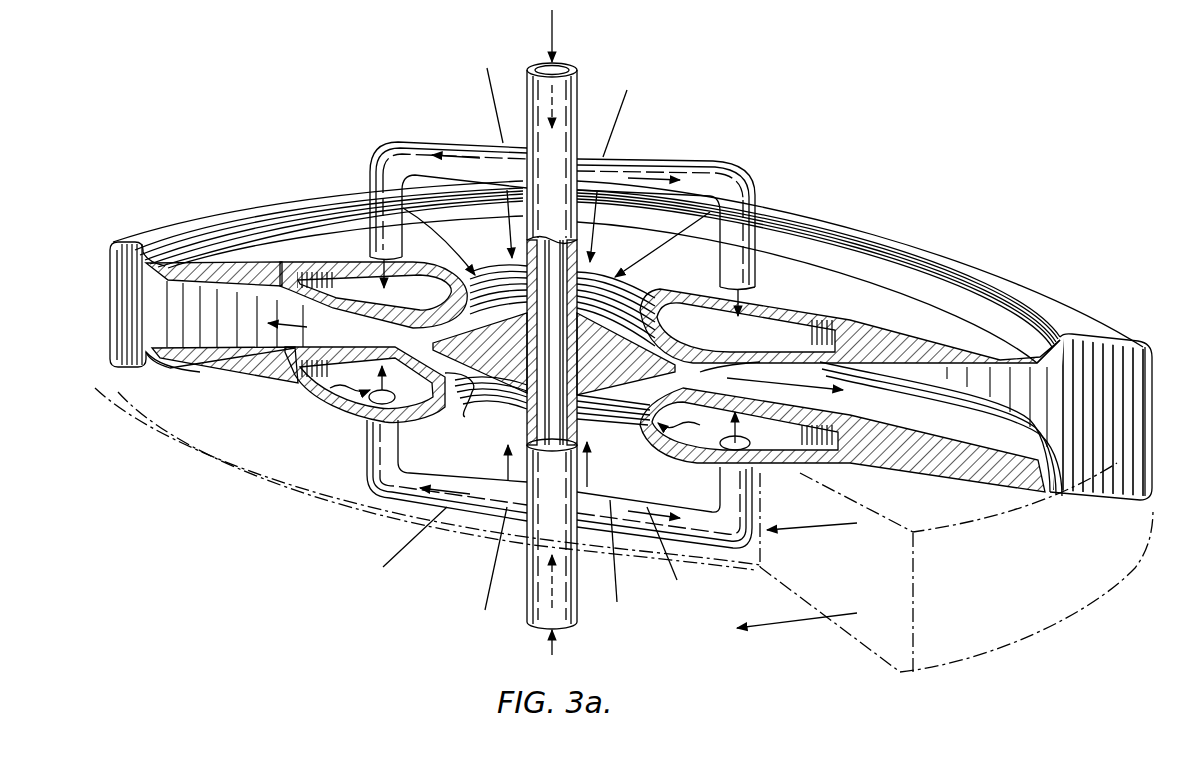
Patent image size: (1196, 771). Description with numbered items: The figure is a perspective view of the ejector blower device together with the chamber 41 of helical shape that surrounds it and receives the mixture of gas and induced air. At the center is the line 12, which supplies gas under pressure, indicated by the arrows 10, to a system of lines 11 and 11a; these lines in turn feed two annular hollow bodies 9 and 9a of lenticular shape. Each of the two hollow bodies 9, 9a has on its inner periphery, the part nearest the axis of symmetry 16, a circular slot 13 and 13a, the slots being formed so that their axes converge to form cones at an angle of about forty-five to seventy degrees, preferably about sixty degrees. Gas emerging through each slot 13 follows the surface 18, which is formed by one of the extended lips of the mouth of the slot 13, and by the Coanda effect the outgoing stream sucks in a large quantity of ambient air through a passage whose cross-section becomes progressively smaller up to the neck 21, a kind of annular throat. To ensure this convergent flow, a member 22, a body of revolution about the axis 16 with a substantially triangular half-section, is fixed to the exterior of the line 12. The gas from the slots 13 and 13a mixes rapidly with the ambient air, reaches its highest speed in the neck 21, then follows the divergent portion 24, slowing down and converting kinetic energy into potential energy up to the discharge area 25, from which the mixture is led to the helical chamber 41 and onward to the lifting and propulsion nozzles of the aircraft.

The annular hollow body 9 is at (333, 290).
The annular hollow body 9a is at (325, 390).
The arrows indicating gas under pressure 10 is at (750, 233).
The line 11 is at (412, 152).
The line 11a is at (480, 505).
The line 12 is at (578, 86).
The circular slot 13 is at (447, 300).
The circular slot 13a is at (462, 408).
The axis of symmetry 16 is at (530, 590).
The surface 18 is at (390, 313).
The neck 21 is at (707, 375).
The member 22 is at (613, 373).
The divergent portion 24 is at (242, 347).
The discharge area 25 is at (168, 358).
The chamber 41 is at (125, 323).